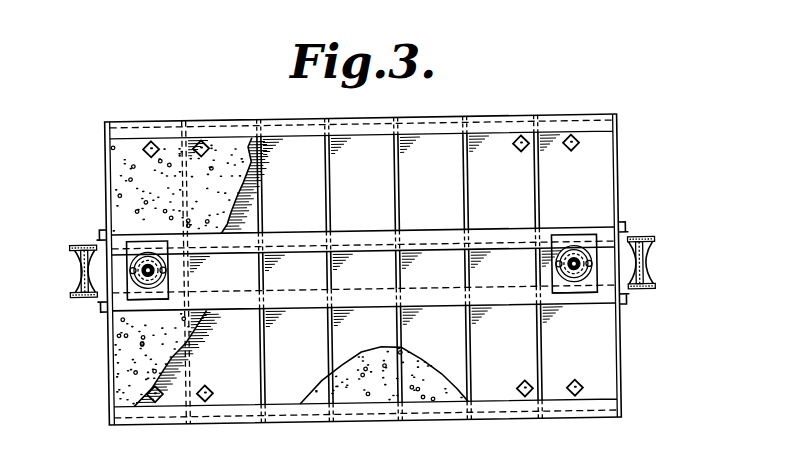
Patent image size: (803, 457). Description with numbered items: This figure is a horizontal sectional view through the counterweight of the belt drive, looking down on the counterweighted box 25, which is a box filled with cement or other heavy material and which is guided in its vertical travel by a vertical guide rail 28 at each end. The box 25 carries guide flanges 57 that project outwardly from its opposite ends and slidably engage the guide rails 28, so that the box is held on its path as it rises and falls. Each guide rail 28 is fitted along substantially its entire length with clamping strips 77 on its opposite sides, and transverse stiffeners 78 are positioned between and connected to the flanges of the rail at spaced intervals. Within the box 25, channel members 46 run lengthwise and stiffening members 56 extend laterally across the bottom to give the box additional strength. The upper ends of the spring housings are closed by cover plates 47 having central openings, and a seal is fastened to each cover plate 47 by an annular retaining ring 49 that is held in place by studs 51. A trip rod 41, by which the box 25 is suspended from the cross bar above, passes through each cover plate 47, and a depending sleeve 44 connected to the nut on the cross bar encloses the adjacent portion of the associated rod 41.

The counterweighted box 25 is at (603, 365).
The vertical guide rail 28 is at (78, 282).
The trip rod 41 is at (170, 286).
The depending sleeve 44 is at (148, 262).
The channel member 46 is at (424, 231).
The cover plate 47 is at (160, 298).
The annular retaining ring 49 is at (147, 287).
The stud 51 is at (166, 269).
The stiffening member 56 is at (332, 187).
The guide flange 57 is at (99, 232).
The clamping strip 77 is at (72, 244).
The transverse stiffener 78 is at (84, 262).